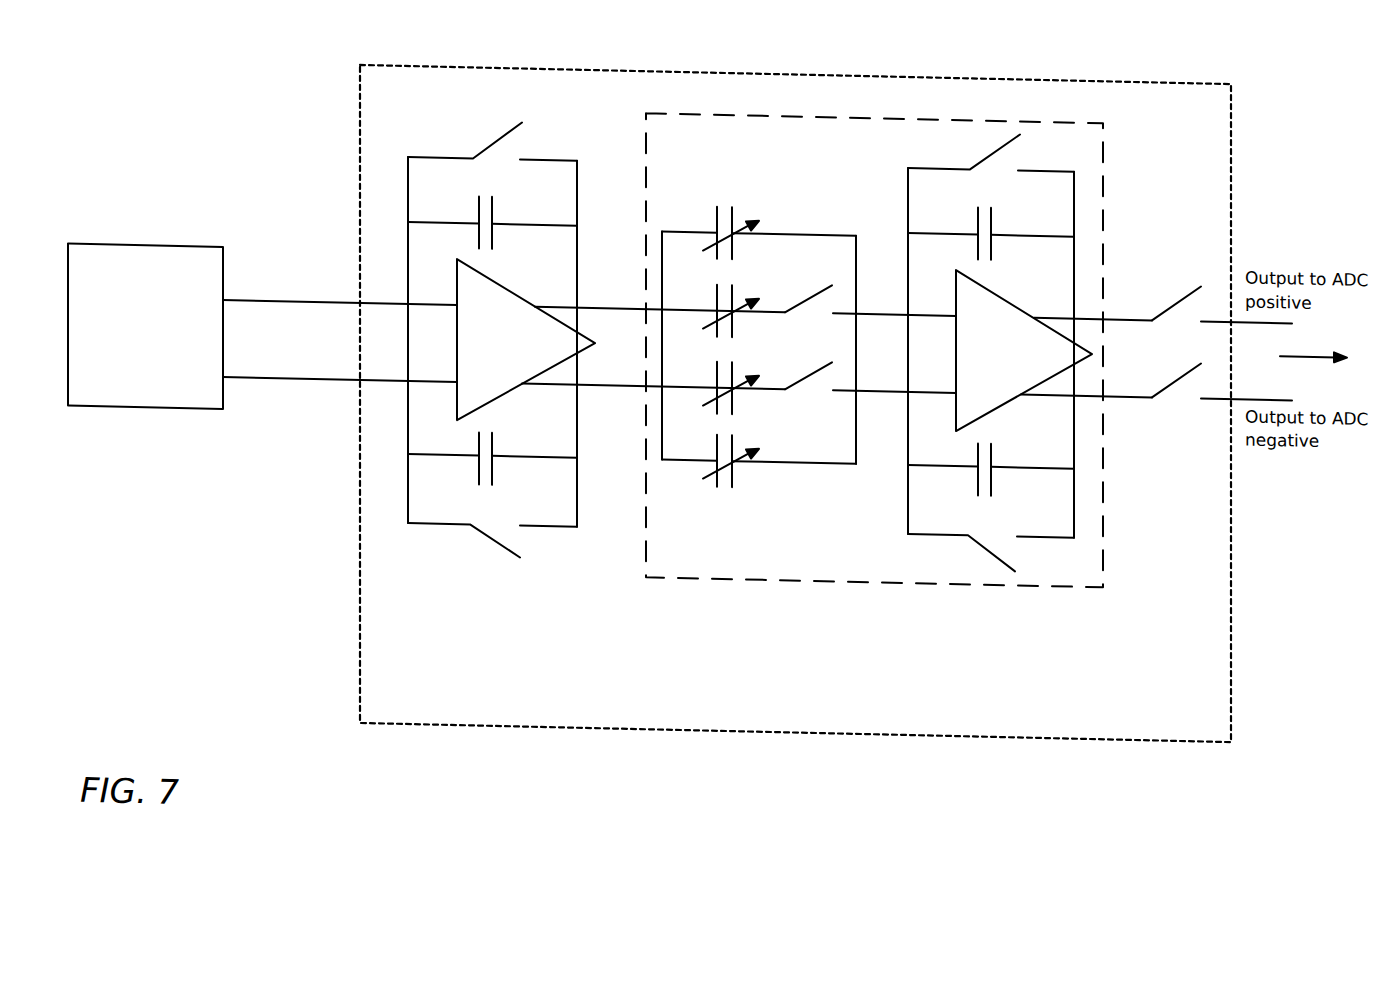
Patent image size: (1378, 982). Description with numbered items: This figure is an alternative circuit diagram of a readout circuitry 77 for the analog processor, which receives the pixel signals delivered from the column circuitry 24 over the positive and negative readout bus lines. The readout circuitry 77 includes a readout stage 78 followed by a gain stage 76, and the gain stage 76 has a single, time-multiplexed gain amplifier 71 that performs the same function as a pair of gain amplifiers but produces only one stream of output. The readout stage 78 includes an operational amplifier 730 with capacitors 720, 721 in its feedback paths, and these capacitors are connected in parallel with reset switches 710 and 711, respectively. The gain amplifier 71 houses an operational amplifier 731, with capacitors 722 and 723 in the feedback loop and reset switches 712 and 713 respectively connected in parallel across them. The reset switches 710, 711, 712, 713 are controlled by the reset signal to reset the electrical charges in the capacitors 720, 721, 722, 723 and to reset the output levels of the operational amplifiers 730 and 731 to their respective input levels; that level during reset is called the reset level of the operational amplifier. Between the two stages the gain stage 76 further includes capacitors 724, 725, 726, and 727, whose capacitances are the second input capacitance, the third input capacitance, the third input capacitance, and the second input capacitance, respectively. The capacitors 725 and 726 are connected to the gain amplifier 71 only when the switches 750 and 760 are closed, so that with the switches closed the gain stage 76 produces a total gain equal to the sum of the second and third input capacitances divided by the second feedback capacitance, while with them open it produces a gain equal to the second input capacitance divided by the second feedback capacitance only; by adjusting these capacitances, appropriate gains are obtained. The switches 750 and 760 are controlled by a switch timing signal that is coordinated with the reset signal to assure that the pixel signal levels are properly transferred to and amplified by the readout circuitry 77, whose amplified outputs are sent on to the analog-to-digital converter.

The column circuitry 24 is at (160, 412).
The readout circuitry 77 is at (652, 65).
The readout stage 78 is at (512, 584).
The gain stage 76 is at (1023, 571).
The gain amplifier 71 is at (902, 166).
The reset switch 710 is at (489, 146).
The reset switch 711 is at (491, 546).
The reset switch 712 is at (986, 146).
The reset switch 713 is at (984, 539).
The capacitor 720 is at (478, 216).
The capacitor 721 is at (476, 472).
The capacitor 722 is at (977, 207).
The capacitor 723 is at (976, 464).
The capacitor 724 is at (716, 208).
The capacitor 725 is at (716, 290).
The capacitor 726 is at (716, 368).
The capacitor 727 is at (716, 448).
The operational amplifier 730 is at (457, 334).
The operational amplifier 731 is at (956, 341).
The switch 750 is at (808, 304).
The switch 760 is at (808, 359).